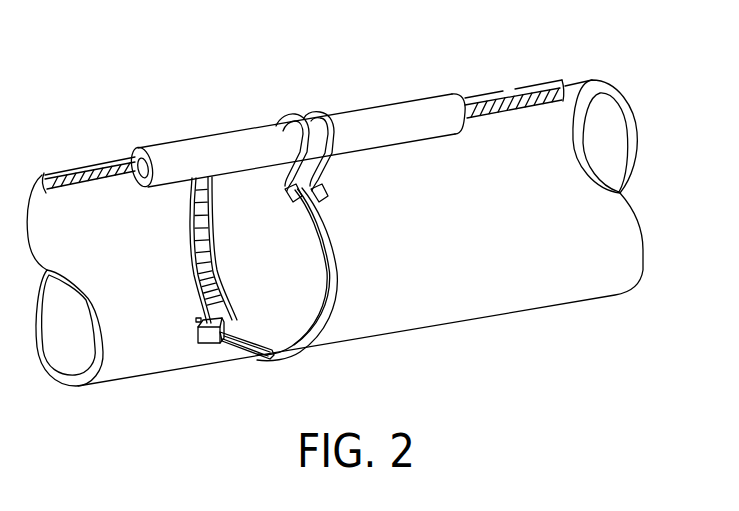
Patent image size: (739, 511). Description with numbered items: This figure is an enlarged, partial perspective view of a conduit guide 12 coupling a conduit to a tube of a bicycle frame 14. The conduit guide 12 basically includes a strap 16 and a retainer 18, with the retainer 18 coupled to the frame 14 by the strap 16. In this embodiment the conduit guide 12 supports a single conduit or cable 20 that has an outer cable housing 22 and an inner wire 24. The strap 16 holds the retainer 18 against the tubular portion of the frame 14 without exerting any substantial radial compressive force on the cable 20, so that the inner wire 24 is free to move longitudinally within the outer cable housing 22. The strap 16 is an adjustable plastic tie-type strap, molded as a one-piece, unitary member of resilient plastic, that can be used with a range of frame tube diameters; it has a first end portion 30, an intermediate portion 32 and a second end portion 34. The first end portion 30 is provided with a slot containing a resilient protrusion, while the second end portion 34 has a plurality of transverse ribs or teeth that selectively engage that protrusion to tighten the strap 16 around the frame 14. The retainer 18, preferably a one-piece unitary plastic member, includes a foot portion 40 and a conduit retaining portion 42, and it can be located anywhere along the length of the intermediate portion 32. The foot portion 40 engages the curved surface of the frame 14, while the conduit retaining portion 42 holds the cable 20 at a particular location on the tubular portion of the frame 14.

The conduit guide 12 is at (346, 73).
The bicycle frame 14 is at (526, 318).
The strap 16 is at (305, 269).
The retainer 18 is at (326, 120).
The cable 20 is at (428, 86).
The outer cable housing 22 is at (442, 138).
The inner wire 24 is at (496, 113).
The first end portion 30 is at (243, 324).
The intermediate portion 32 is at (312, 217).
The second end portion 34 is at (260, 348).
The foot portion 40 is at (342, 181).
The conduit retaining portion 42 is at (349, 140).